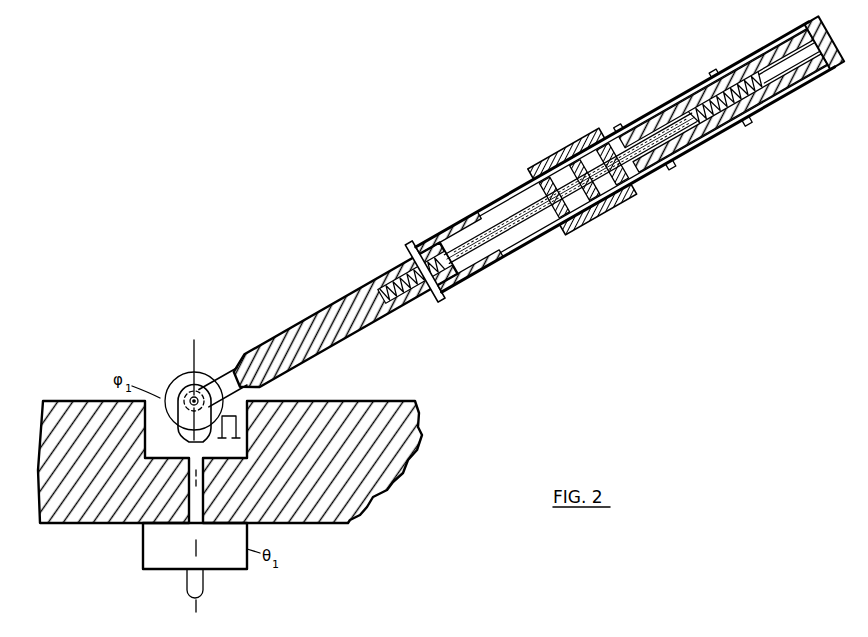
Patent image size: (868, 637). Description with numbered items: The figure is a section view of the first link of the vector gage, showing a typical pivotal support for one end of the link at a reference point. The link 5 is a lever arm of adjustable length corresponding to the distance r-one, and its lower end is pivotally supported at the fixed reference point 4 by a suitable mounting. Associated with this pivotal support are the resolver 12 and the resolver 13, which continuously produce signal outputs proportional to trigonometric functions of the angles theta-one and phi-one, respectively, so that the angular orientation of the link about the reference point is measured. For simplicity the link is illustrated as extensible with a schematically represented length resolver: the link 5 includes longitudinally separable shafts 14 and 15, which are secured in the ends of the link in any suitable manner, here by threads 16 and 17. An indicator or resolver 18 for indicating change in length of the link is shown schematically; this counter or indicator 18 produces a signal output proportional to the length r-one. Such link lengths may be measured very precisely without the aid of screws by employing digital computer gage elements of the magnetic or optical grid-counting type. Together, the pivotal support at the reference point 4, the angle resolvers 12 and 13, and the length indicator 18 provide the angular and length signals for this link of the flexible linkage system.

The fixed reference point 4 is at (182, 392).
The link 5 is at (308, 316).
The resolver 12 is at (152, 552).
The resolver 13 is at (189, 377).
The shaft 14 is at (630, 155).
The shaft 15 is at (532, 210).
The threads 16 is at (455, 283).
The threads 17 is at (722, 122).
The indicator or resolver 18 is at (565, 180).